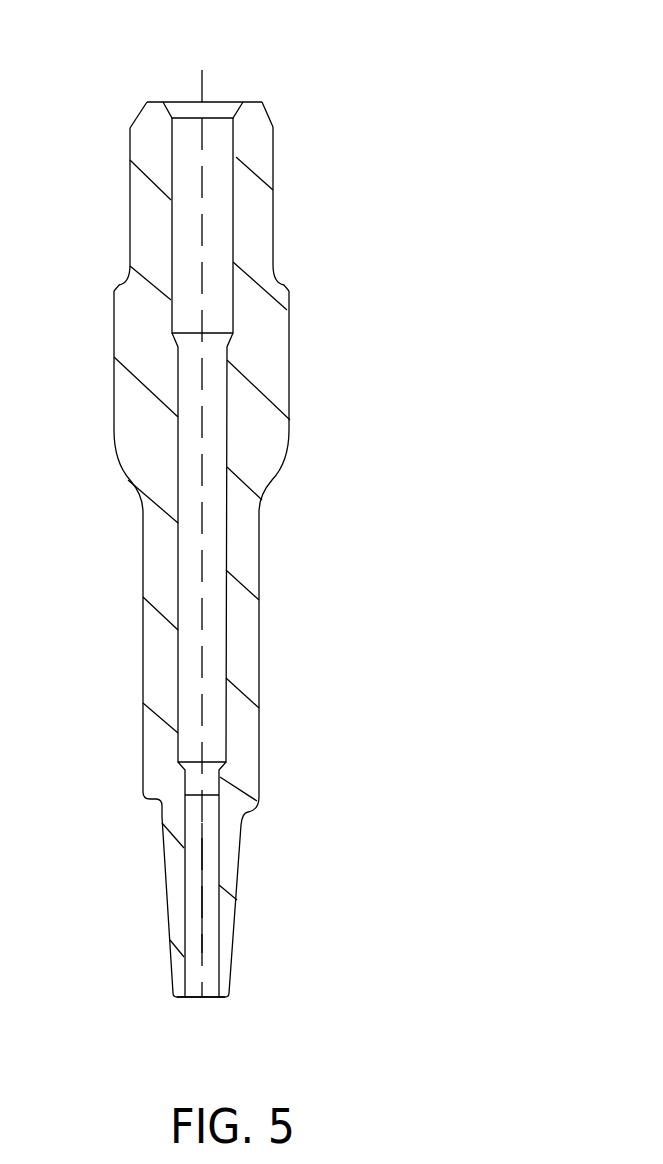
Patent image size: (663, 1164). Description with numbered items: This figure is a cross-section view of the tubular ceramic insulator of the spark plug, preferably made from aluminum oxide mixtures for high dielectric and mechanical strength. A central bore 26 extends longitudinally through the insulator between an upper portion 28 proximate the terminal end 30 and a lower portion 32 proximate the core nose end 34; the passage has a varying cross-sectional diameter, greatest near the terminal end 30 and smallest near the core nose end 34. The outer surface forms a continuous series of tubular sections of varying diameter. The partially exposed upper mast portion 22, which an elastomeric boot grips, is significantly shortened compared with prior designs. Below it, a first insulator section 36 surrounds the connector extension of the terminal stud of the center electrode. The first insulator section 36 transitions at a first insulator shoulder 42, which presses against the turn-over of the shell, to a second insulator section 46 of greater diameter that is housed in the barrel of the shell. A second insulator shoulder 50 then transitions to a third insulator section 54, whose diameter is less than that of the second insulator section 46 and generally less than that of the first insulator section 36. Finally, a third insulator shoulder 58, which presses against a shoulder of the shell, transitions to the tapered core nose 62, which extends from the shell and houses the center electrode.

The upper mast portion 22 is at (273, 173).
The central bore 26 is at (208, 120).
The upper portion 28 is at (170, 227).
The terminal end 30 is at (253, 97).
The lower portion 32 is at (212, 929).
The core nose end 34 is at (228, 998).
The first insulator section 36 is at (273, 232).
The first insulator shoulder 42 is at (285, 268).
The second insulator section 46 is at (290, 392).
The second insulator shoulder 50 is at (277, 472).
The third insulator section 54 is at (259, 638).
The third insulator shoulder 58 is at (245, 805).
The tapered core nose 62 is at (235, 922).